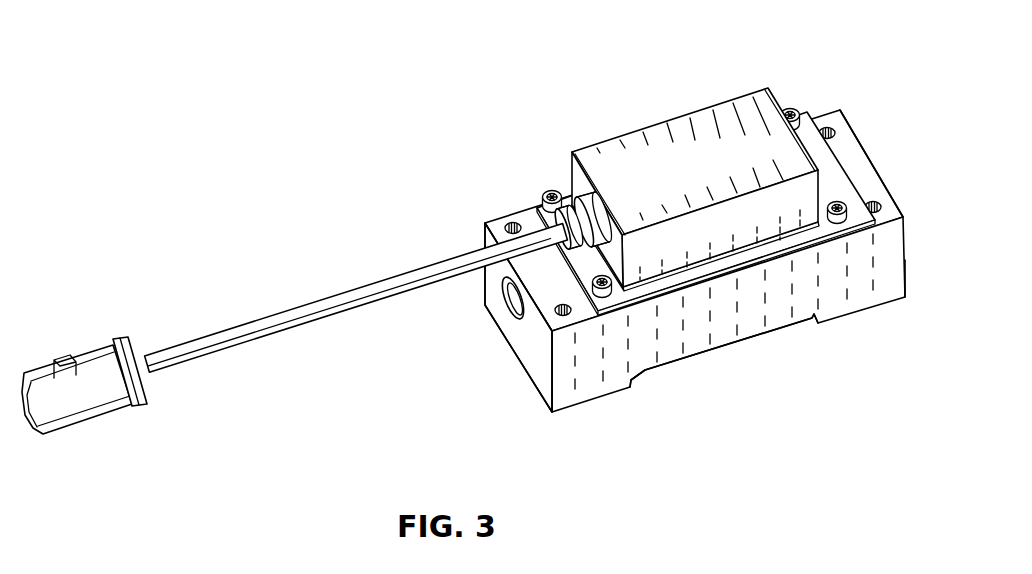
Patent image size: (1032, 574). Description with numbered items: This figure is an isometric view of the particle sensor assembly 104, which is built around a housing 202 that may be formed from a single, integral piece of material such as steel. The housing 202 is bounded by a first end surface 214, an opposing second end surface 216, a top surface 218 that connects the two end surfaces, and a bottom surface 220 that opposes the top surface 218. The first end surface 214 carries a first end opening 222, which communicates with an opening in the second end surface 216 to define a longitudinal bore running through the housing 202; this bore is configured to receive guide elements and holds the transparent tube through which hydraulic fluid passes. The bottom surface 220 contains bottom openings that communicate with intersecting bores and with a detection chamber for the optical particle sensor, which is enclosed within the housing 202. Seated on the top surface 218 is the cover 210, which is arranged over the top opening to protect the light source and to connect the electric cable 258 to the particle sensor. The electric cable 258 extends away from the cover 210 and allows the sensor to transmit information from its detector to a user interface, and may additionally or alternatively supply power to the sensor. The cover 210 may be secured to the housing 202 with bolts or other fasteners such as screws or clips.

The particle sensor assembly 104 is at (156, 49).
The housing 202 is at (838, 311).
The cover 210 is at (646, 132).
The first end surface 214 is at (540, 377).
The second end surface 216 is at (885, 181).
The top surface 218 is at (489, 232).
The bottom surface 220 is at (592, 382).
The first end opening 222 is at (520, 323).
The electric cable 258 is at (313, 303).